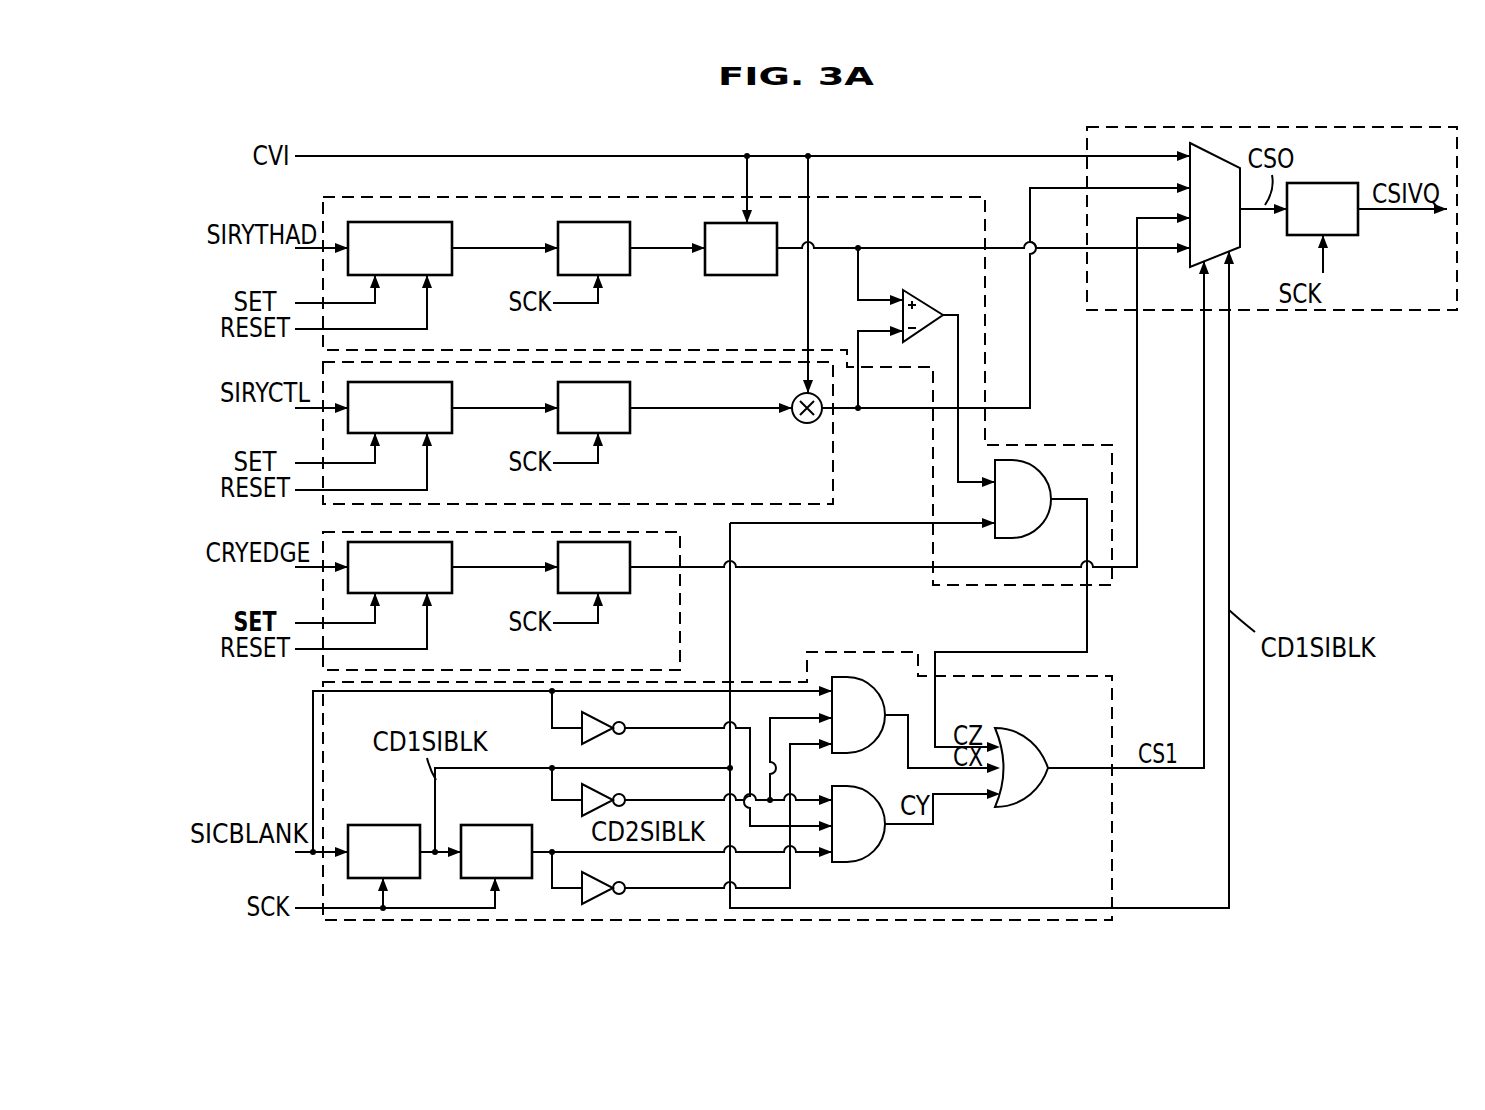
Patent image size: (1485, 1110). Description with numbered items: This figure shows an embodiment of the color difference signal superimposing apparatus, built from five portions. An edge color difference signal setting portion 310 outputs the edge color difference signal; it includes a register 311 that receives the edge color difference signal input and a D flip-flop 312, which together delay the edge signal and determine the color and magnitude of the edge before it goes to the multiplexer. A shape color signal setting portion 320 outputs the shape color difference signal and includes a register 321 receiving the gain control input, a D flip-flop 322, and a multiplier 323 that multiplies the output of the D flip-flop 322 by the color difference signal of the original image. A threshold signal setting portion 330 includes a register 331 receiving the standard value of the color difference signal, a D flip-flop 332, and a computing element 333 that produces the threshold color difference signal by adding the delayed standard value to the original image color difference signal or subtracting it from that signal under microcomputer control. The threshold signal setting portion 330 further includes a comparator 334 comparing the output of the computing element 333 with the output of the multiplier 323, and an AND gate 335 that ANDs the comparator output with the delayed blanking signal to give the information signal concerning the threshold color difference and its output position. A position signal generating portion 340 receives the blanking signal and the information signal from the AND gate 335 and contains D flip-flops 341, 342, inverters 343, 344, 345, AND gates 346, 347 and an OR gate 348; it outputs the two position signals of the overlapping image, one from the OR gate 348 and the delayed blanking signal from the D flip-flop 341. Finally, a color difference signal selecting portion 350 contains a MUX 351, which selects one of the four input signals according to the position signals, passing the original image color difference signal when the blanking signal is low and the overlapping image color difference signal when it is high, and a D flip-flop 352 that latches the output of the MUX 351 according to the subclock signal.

The edge color difference signal setting portion 310 is at (680, 605).
The register 311 is at (440, 593).
The D flip-flop 312 is at (615, 593).
The shape color signal setting portion 320 is at (833, 485).
The register 321 is at (440, 433).
The D flip-flop 322 is at (615, 433).
The multiplier 323 is at (797, 420).
The threshold signal setting portion 330 is at (320, 200).
The register 331 is at (440, 275).
The D flip-flop 332 is at (615, 275).
The computing element 333 is at (741, 275).
The comparator 334 is at (925, 302).
The AND gate 335 is at (1047, 490).
The position signal generating portion 340 is at (1112, 848).
The D flip-flop 341 is at (385, 825).
The D flip-flop 342 is at (497, 825).
The inverter 343 is at (580, 735).
The inverter 344 is at (606, 790).
The inverter 345 is at (606, 885).
The AND gate 346 is at (850, 677).
The AND gate 347 is at (878, 858).
The OR gate 348 is at (1013, 808).
The color difference signal selecting portion 350 is at (1343, 312).
The MUX 351 is at (1242, 235).
The D flip-flop 352 is at (1345, 235).